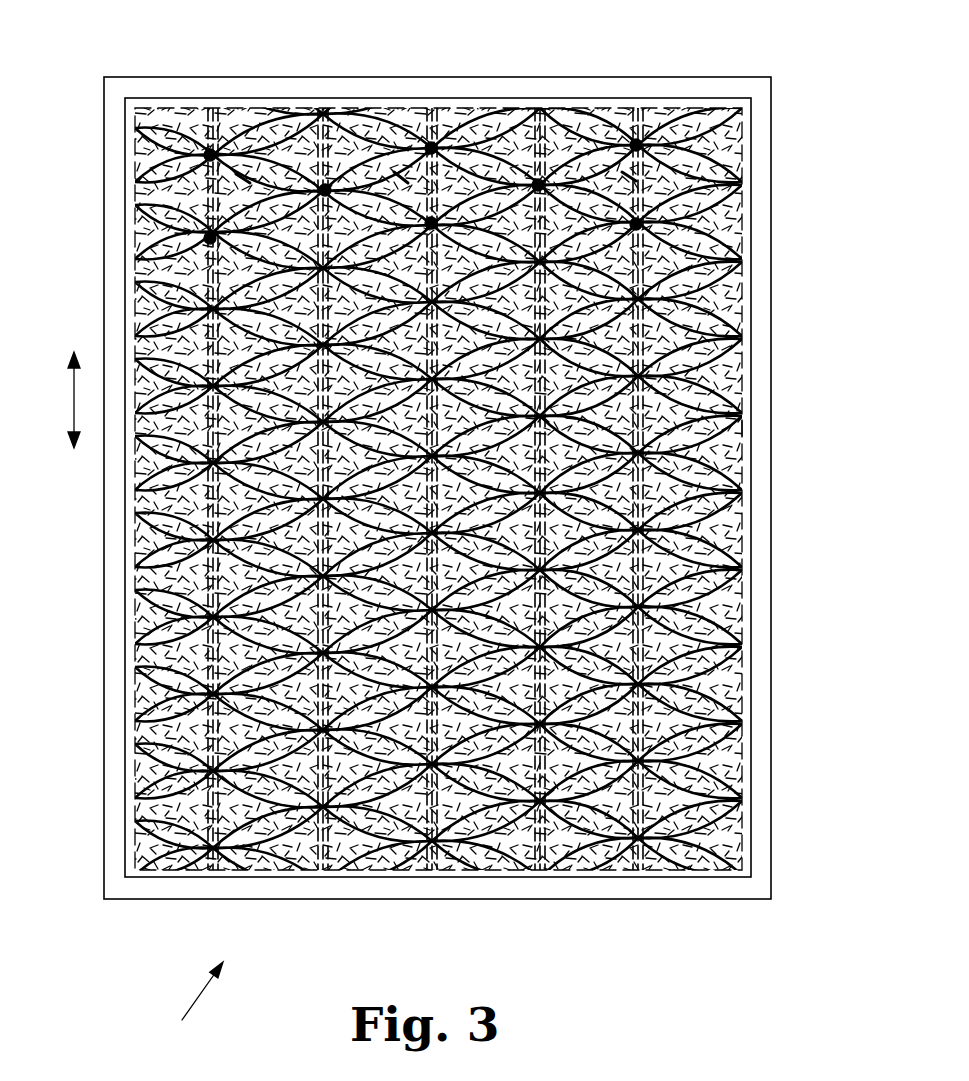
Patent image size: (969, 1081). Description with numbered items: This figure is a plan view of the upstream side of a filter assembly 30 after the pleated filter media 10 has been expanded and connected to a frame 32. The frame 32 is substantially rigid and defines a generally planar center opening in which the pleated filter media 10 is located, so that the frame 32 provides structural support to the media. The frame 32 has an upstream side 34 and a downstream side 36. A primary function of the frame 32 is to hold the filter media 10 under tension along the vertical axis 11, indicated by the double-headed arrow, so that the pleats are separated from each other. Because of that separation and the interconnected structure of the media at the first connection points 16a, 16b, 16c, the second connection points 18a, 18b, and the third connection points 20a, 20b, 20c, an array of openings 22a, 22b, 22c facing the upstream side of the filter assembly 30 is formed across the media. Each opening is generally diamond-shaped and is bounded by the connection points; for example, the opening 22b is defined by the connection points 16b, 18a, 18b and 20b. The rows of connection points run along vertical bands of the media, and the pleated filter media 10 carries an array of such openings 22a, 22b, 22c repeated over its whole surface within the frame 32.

The pleated filter media 10 is at (390, 870).
The vertical axis 11 is at (72, 401).
The first connection point 16a is at (207, 150).
The first connection point 16b is at (432, 145).
The first connection point 16c is at (638, 141).
The second connection point 18a is at (325, 186).
The second connection point 18b is at (538, 181).
The third connection point 20a is at (207, 236).
The third connection point 20b is at (433, 219).
The third connection point 20c is at (641, 224).
The opening 22a is at (242, 183).
The opening 22b is at (400, 186).
The opening 22c is at (630, 178).
The filter assembly 30 is at (185, 1004).
The frame 32 is at (683, 895).
The upstream side 34 is at (487, 890).
The downstream side 36 is at (750, 430).